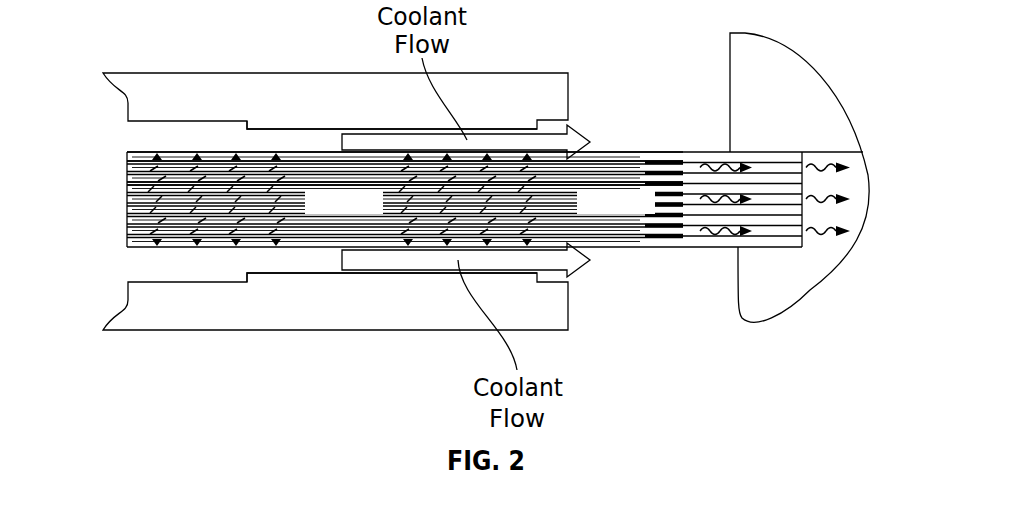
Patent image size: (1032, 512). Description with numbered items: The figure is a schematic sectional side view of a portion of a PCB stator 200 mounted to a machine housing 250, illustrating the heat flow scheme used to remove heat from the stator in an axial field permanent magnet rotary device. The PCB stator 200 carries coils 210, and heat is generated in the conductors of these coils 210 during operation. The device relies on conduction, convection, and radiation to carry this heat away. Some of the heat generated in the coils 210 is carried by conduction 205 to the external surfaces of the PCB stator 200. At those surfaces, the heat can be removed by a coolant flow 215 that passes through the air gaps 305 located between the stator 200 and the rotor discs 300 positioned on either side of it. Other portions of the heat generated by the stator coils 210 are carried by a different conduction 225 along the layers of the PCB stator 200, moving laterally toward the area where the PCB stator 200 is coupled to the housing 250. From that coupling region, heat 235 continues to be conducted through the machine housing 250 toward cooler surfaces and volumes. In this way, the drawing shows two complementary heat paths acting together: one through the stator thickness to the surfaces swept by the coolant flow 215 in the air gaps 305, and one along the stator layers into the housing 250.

The PCB stator 200 is at (129, 250).
The conduction 205 is at (153, 186).
The coils 210 is at (127, 164).
The coolant flow 215 is at (580, 130).
The conduction 225 is at (713, 163).
The heat 235 is at (823, 160).
The housing 250 is at (763, 62).
The rotor discs 300 is at (295, 85).
The air gaps 305 is at (270, 140).